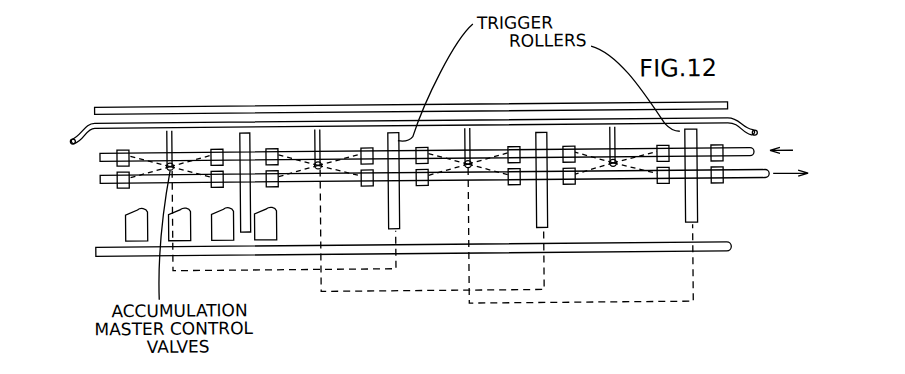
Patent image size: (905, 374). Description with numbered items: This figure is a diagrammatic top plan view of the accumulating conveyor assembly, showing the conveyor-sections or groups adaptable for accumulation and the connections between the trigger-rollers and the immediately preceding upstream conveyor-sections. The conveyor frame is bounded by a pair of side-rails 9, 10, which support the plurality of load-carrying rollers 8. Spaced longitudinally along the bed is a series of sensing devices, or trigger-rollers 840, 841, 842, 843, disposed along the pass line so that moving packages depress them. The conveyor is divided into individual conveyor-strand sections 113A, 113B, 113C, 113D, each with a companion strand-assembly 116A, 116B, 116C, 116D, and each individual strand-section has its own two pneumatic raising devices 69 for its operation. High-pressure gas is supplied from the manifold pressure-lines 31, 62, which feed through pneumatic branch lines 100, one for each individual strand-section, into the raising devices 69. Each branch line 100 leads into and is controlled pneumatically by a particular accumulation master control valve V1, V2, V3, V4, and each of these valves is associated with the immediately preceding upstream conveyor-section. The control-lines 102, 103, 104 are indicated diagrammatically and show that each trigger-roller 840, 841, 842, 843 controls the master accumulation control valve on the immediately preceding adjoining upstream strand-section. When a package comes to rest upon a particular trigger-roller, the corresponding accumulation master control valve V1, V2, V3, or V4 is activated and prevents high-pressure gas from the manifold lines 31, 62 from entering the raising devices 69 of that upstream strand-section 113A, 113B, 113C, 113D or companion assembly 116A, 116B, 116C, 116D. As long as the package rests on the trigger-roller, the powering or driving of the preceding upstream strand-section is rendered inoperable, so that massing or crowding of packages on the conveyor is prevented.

The side-rail 9 is at (98, 106).
The pressure-line 31 is at (86, 121).
The pressure-line 62 is at (73, 141).
The pneumatic raising device 69 is at (218, 147).
The pneumatic branch line 100 is at (163, 160).
The conveyor-strand section 113A is at (162, 160).
The conveyor-strand section 113B is at (338, 155).
The conveyor-strand section 113C is at (448, 157).
The conveyor-strand section 113D is at (580, 152).
The companion strand-assembly 116A is at (148, 178).
The companion strand-assembly 116B is at (322, 183).
The companion strand-assembly 116C is at (476, 183).
The companion strand-assembly 116D is at (618, 178).
The accumulation master control valve V1 is at (174, 165).
The accumulation master control valve V2 is at (322, 163).
The accumulation master control valve V3 is at (466, 168).
The accumulation master control valve V4 is at (614, 166).
The trigger-roller 840 is at (245, 131).
The trigger-roller 841 is at (393, 132).
The trigger-roller 842 is at (540, 133).
The trigger-roller 843 is at (693, 131).
The load-carrying roller 8 is at (125, 223).
The side-rail 10 is at (100, 250).
The control-line 102 is at (300, 268).
The control-line 103 is at (386, 289).
The control-line 104 is at (516, 303).